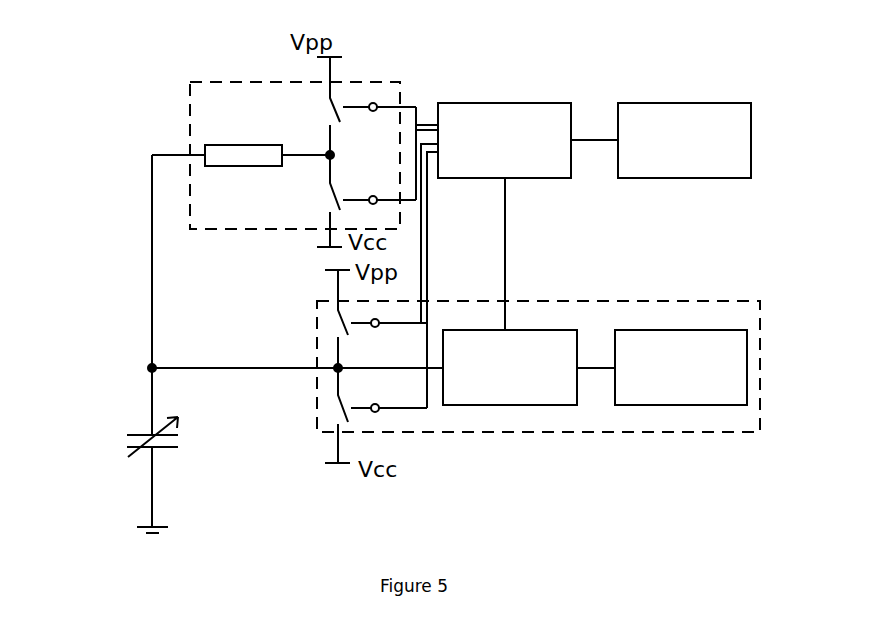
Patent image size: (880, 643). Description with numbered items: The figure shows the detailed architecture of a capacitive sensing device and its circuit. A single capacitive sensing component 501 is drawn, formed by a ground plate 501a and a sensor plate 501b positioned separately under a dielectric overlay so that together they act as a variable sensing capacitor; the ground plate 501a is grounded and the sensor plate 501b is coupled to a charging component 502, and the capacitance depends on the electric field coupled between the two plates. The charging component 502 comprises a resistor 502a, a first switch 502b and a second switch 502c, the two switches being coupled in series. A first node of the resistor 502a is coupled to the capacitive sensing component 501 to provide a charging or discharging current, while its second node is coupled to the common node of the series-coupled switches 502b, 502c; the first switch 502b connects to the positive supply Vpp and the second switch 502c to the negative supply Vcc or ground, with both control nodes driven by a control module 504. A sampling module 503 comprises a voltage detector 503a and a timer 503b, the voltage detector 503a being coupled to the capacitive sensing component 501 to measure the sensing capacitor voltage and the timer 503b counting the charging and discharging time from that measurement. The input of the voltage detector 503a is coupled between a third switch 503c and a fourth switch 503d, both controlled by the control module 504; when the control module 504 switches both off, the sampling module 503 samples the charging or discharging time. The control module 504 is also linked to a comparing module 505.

The capacitive sensing component 501 is at (96, 460).
The ground plate 501a is at (163, 448).
The sensor plate 501b is at (140, 432).
The charging component 502 is at (238, 82).
The resistor 502a is at (227, 143).
The first switch 502b is at (338, 110).
The second switch 502c is at (336, 201).
The sampling module 503 is at (555, 300).
The voltage detector 503a is at (530, 405).
The timer 503b is at (693, 330).
The third switch 503c is at (347, 325).
The fourth switch 503d is at (347, 406).
The control module 504 is at (507, 103).
The comparing module 505 is at (675, 103).